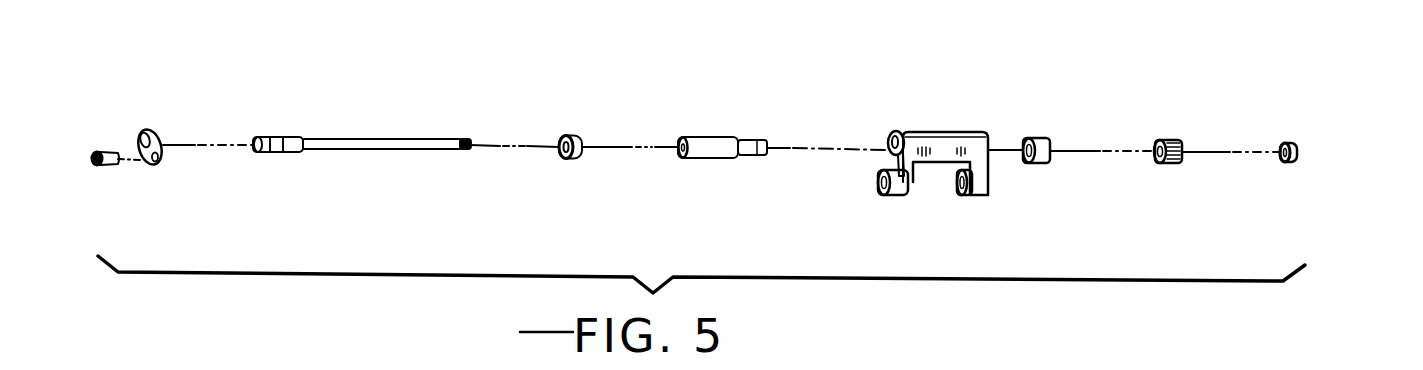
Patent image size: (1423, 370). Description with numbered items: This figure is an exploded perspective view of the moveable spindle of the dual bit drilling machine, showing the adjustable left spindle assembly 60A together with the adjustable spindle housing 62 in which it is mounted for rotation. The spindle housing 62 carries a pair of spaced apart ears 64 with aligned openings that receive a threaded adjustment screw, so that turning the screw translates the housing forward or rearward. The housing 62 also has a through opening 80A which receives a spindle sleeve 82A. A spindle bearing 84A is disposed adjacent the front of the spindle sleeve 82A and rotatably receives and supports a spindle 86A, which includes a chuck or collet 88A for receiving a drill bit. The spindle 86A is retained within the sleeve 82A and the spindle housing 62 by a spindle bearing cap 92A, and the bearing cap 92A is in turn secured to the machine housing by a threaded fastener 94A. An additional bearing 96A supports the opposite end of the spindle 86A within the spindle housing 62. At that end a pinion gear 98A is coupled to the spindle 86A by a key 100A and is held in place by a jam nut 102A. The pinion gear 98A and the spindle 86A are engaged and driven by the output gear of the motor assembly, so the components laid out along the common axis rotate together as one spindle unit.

The left spindle assembly 60A is at (1320, 146).
The adjustable spindle housing 62 is at (950, 147).
The ears 64 is at (972, 197).
The through opening 80A is at (890, 141).
The spindle sleeve 82A is at (708, 163).
The spindle bearing 84A is at (575, 132).
The spindle 86A is at (418, 138).
The chuck or collet 88A is at (283, 137).
The spindle bearing cap 92A is at (148, 130).
The threaded fastener 94A is at (99, 166).
The additional bearing 96A is at (1037, 164).
The pinion gear 98A is at (1168, 138).
The key 100A is at (1124, 143).
The jam nut 102A is at (1287, 162).